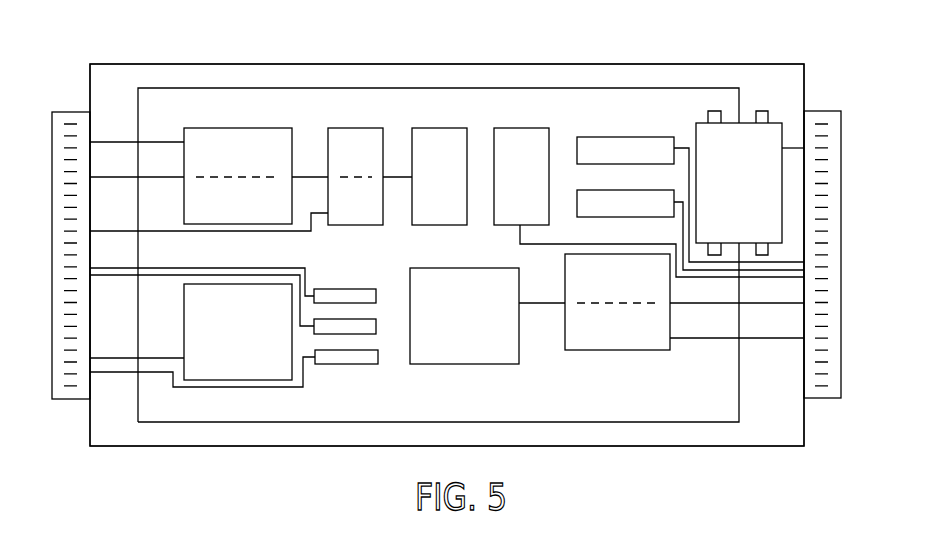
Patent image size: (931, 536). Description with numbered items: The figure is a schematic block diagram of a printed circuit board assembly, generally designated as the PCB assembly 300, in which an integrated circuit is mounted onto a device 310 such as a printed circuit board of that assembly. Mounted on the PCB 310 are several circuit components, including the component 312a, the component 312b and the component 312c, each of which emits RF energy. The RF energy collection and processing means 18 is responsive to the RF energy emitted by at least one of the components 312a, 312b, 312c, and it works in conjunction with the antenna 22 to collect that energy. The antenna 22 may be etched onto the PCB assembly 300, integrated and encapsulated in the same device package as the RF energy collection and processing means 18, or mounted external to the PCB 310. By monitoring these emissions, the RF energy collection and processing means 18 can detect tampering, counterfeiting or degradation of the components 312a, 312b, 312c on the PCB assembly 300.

The PCB assembly 300 is at (178, 448).
The device 310 is at (270, 448).
The antenna 22 is at (627, 88).
The RF energy collection and processing means 18 is at (748, 112).
The component 312a is at (243, 128).
The component 312b is at (439, 128).
The component 312c is at (521, 128).